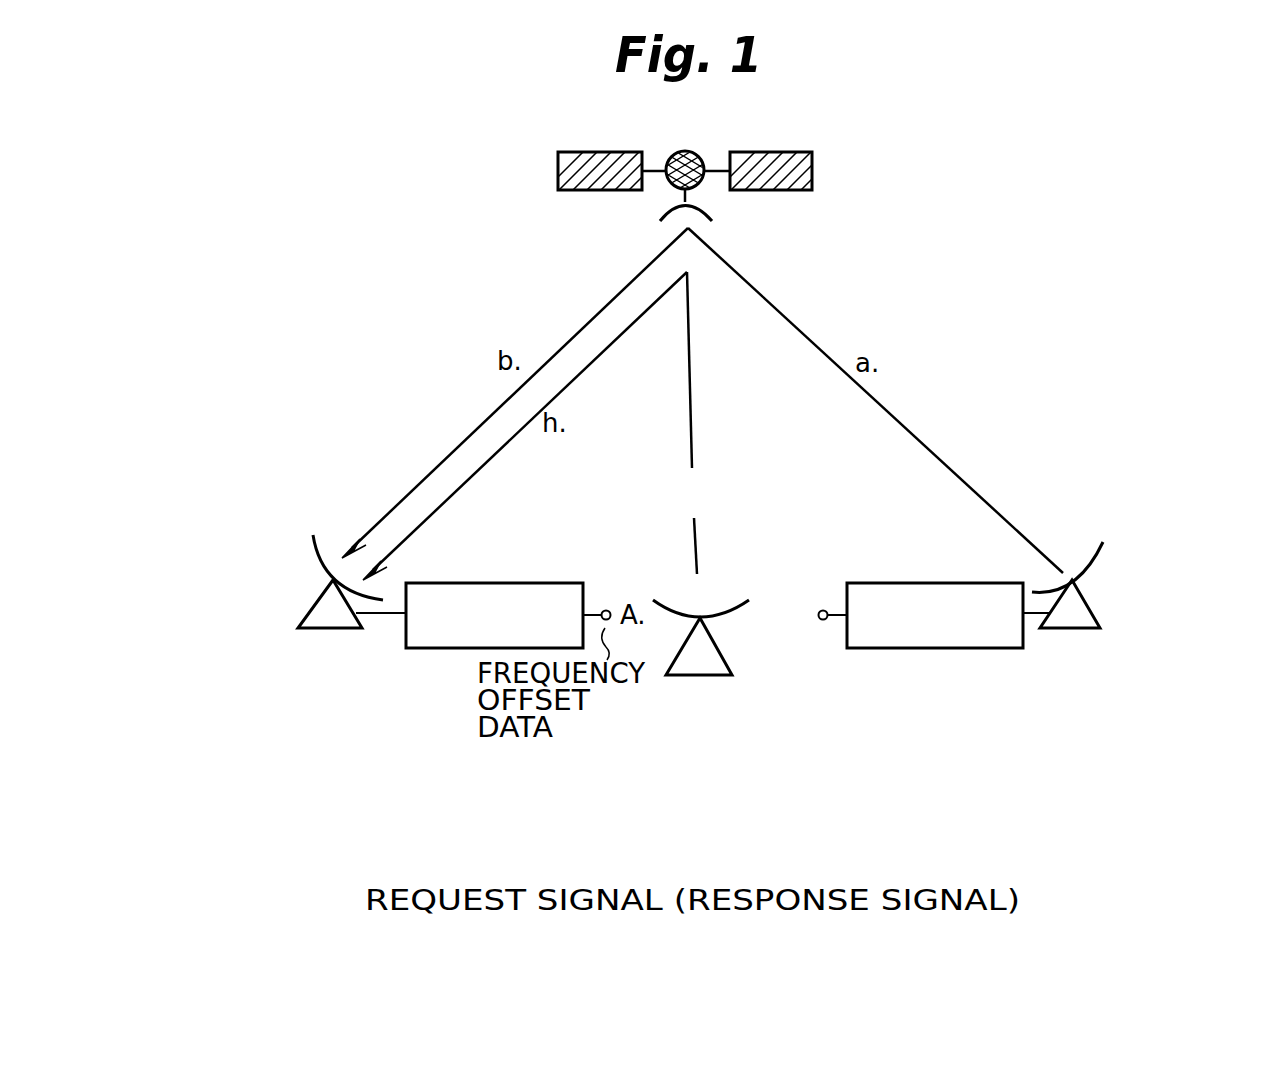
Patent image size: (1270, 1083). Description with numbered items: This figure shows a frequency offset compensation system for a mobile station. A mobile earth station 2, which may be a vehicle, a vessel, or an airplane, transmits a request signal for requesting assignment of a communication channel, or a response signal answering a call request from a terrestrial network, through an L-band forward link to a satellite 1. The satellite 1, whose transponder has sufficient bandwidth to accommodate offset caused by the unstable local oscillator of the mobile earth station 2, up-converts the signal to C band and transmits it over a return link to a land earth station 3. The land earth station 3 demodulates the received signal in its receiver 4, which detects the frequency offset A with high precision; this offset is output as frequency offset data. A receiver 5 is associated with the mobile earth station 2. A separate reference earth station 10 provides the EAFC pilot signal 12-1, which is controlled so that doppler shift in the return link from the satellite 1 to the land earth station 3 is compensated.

The satellite 1 is at (812, 166).
The mobile earth station 2 is at (1072, 632).
The land earth station 3 is at (330, 632).
The receiver 4 is at (490, 583).
The receiver 5 is at (930, 583).
The reference earth station 10 is at (702, 678).
The EAFC pilot signal 12-1 is at (691, 423).